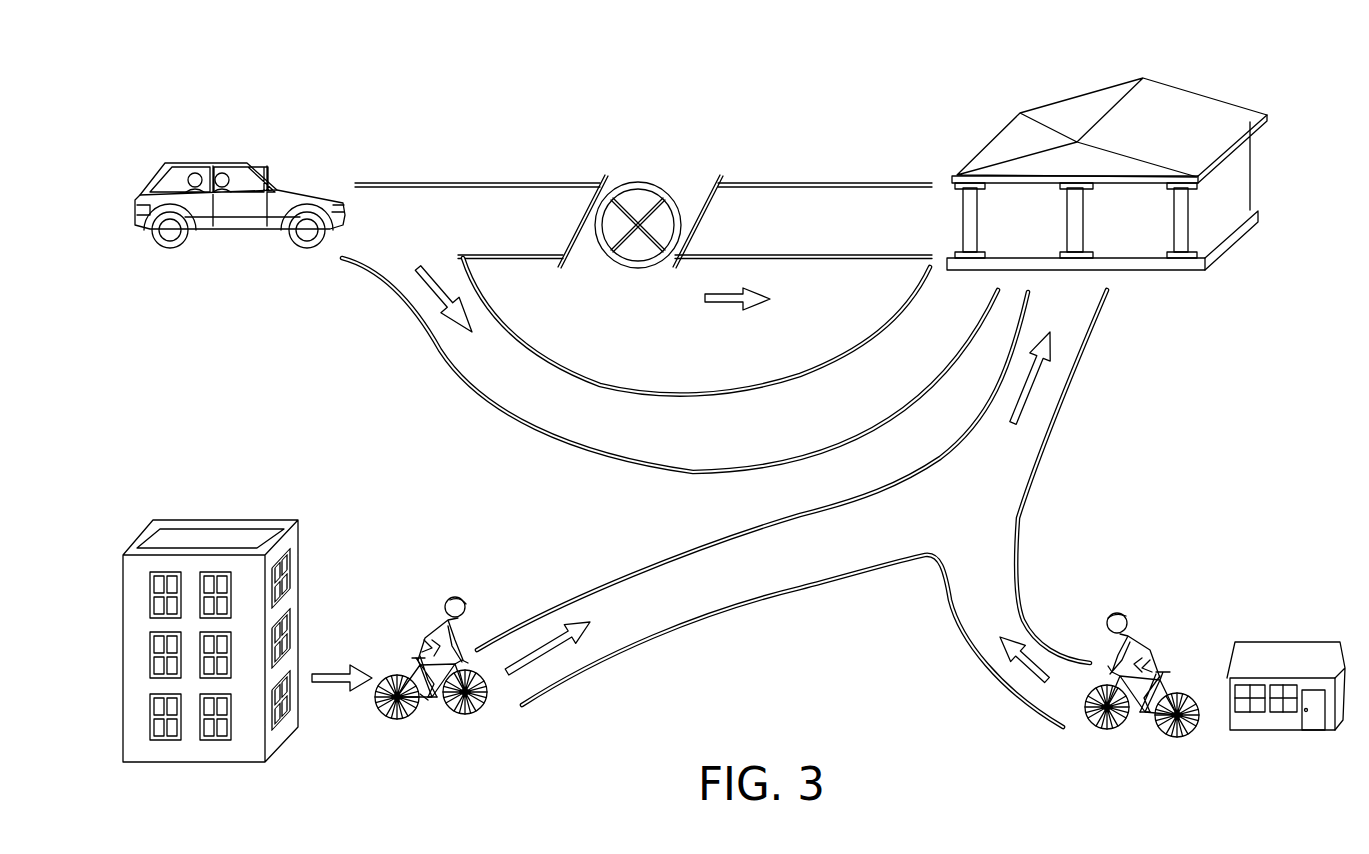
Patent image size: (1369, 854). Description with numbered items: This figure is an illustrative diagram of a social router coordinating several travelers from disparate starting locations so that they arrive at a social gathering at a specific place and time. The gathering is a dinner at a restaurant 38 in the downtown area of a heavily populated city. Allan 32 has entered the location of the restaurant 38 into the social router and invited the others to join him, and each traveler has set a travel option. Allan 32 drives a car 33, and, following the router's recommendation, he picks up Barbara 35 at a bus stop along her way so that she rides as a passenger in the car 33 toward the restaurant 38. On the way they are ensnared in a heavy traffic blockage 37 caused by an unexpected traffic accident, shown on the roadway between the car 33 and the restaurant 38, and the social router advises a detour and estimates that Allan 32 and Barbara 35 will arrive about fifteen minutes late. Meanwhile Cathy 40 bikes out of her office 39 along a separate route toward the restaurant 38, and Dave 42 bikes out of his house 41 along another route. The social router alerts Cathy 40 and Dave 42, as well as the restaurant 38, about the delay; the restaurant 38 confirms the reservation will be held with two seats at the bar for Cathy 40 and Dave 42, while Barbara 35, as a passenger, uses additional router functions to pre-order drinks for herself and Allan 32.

The Allan 32 is at (224, 173).
The car 33 is at (295, 190).
The Barbara 35 is at (200, 174).
The traffic blockage 37 is at (638, 182).
The restaurant 38 is at (993, 140).
The office 39 is at (203, 534).
The Cathy 40 is at (430, 616).
The house 41 is at (1288, 640).
The Dave 42 is at (1138, 625).